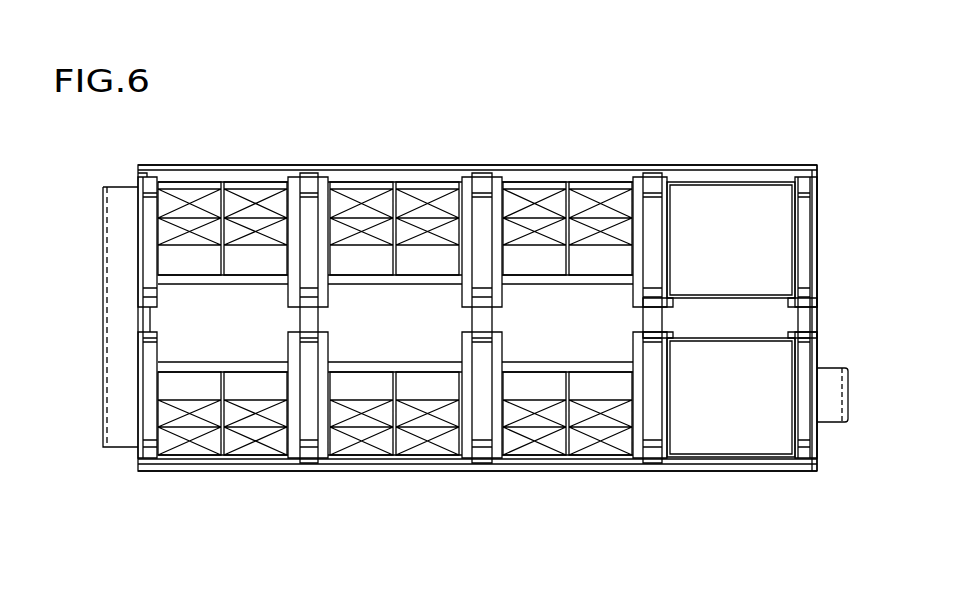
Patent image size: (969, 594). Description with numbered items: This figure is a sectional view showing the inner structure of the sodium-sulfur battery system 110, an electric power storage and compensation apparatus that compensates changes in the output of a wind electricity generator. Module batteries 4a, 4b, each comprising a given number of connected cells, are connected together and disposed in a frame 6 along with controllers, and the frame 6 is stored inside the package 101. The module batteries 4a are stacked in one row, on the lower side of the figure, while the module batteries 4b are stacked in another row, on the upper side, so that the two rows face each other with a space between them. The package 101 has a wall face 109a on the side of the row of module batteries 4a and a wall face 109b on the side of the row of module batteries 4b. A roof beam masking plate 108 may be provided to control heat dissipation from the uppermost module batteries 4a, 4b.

The sodium-sulfur battery system 110 is at (821, 138).
The package 101 is at (817, 207).
The wall face 109b is at (574, 170).
The wall face 109a is at (548, 472).
The roof beam masking plate 108 is at (530, 212).
The frame 6 is at (317, 448).
The module battery 4b is at (728, 198).
The module battery 4a is at (722, 437).